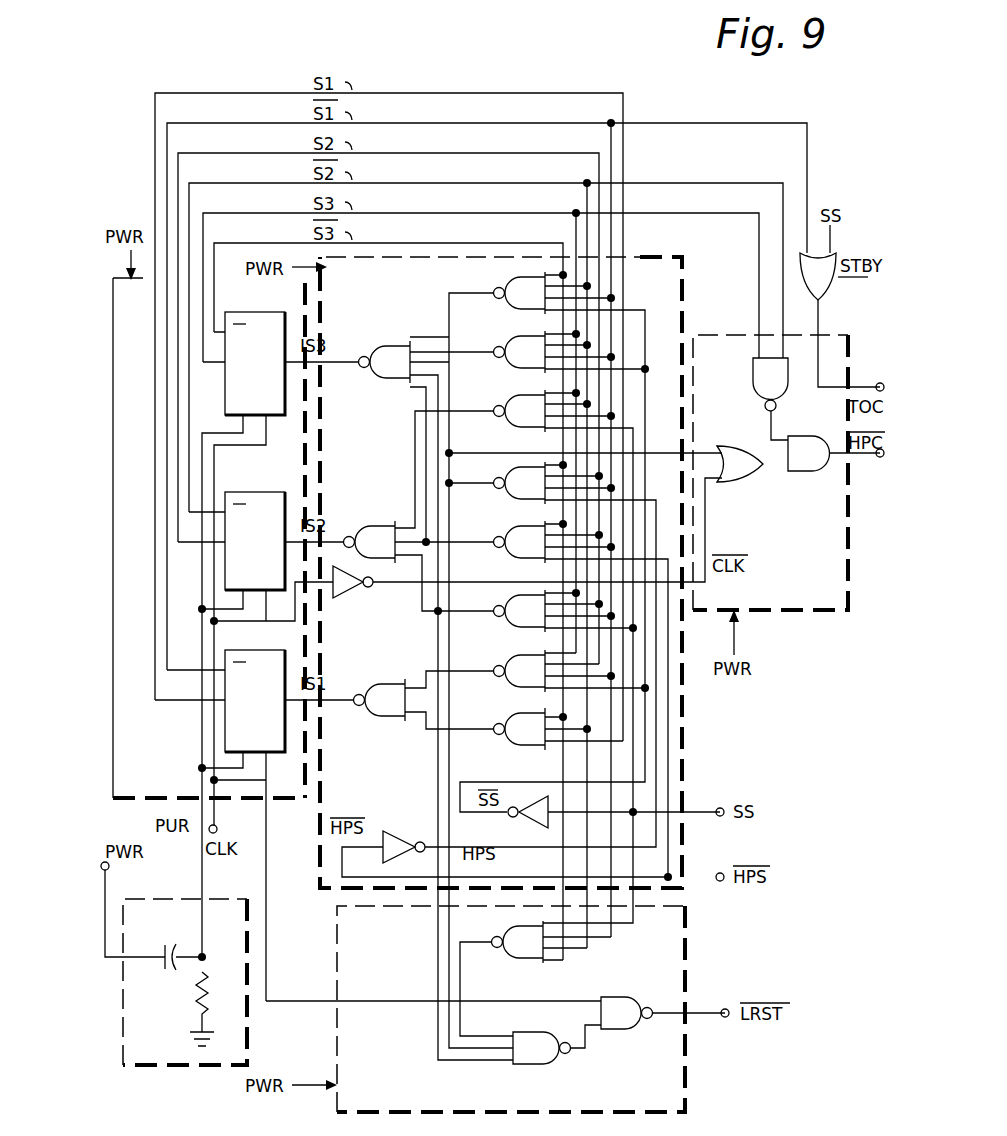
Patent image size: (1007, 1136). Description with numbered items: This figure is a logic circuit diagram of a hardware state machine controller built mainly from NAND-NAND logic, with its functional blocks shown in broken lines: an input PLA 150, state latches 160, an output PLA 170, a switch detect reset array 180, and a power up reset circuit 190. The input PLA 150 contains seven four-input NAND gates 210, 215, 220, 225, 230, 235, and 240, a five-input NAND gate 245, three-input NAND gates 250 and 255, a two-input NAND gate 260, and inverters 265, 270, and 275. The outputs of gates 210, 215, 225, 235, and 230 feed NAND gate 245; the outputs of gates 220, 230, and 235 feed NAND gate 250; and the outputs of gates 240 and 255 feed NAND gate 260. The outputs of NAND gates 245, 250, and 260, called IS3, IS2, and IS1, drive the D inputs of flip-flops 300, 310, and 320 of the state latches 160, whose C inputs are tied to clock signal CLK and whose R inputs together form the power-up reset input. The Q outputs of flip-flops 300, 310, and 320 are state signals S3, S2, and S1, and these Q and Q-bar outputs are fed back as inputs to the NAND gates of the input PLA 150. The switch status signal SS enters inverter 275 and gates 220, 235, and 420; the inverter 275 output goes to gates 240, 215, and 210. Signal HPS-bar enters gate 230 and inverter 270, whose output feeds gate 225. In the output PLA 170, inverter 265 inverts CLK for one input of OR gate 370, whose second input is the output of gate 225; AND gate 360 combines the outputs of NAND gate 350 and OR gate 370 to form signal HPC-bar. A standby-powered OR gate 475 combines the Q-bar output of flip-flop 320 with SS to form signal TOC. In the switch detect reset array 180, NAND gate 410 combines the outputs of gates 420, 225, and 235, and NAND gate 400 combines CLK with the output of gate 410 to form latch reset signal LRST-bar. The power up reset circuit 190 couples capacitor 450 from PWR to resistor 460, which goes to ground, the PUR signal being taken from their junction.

The input PLA 150 is at (386, 301).
The state latches 160 is at (170, 754).
The output PLA 170 is at (774, 615).
The switch detect reset array 180 is at (692, 930).
The power up reset circuit 190 is at (158, 1065).
The four input NAND gate 210 is at (509, 309).
The four input NAND gate 215 is at (509, 367).
The four input NAND gate 220 is at (509, 427).
The four input NAND gate 225 is at (509, 499).
The four input NAND gate 230 is at (509, 557).
The four input NAND gate 235 is at (509, 626).
The four input NAND gate 240 is at (509, 685).
The five input NAND gate 245 is at (395, 379).
The three input NAND gate 250 is at (377, 526).
The three input NAND gate 255 is at (509, 744).
The two input NAND gate 260 is at (397, 683).
The inverter 265 is at (346, 598).
The inverter 270 is at (400, 832).
The inverter 275 is at (526, 824).
The flip-flop 300 is at (249, 312).
The flip-flop 310 is at (249, 492).
The flip-flop 320 is at (249, 650).
The two input NAND gate 350 is at (753, 380).
The AND gate 360 is at (797, 472).
The OR gate 370 is at (737, 446).
The two input NAND gate 400 is at (618, 1030).
The three input NAND gate 410 is at (528, 1065).
The four input NAND gate 420 is at (518, 960).
The capacitor 450 is at (170, 942).
The resistor 460 is at (195, 1002).
The OR gate 475 is at (826, 299).